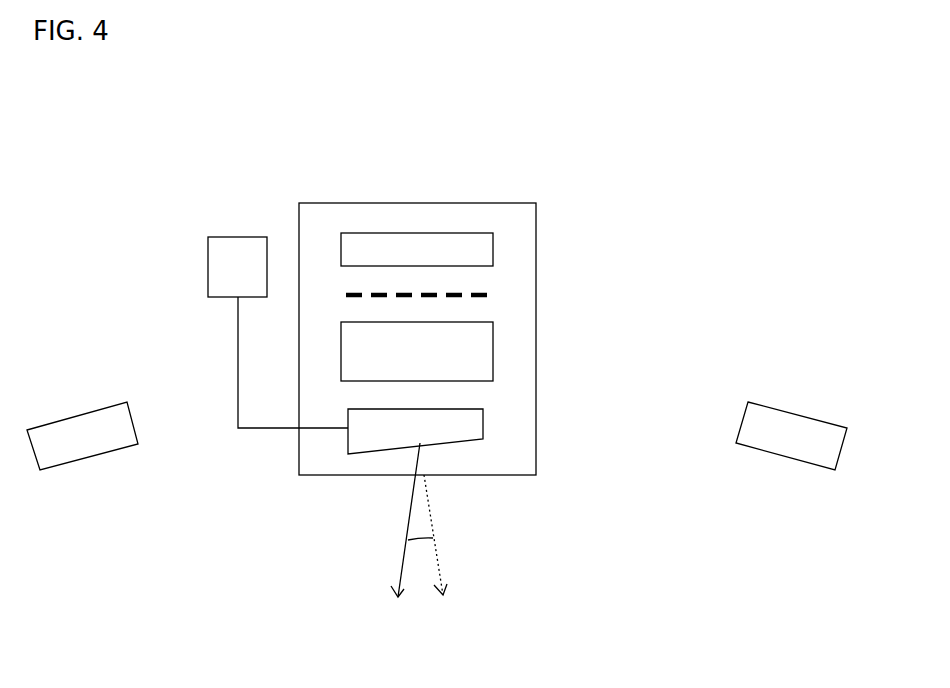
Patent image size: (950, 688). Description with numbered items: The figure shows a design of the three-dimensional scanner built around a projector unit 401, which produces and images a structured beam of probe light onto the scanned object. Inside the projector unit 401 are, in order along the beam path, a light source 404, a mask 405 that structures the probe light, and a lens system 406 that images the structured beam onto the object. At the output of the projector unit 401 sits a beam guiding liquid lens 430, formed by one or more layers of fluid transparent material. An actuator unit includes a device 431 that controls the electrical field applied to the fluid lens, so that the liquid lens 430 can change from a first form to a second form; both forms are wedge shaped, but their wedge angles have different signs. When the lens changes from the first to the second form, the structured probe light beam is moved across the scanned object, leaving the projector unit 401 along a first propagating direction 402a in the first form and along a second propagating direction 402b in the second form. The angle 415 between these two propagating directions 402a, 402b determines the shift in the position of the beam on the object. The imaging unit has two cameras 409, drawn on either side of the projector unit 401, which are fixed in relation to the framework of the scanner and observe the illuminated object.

The projector unit 401 is at (417, 318).
The light source 404 is at (484, 245).
The mask 405 is at (487, 294).
The lens system 406 is at (484, 351).
The beam guiding liquid lens 430 is at (501, 433).
The device 431 is at (255, 311).
The cameras 409 is at (429, 424).
The propagating direction 402a is at (372, 520).
The propagating direction 402b is at (459, 555).
The angle 415 is at (485, 571).